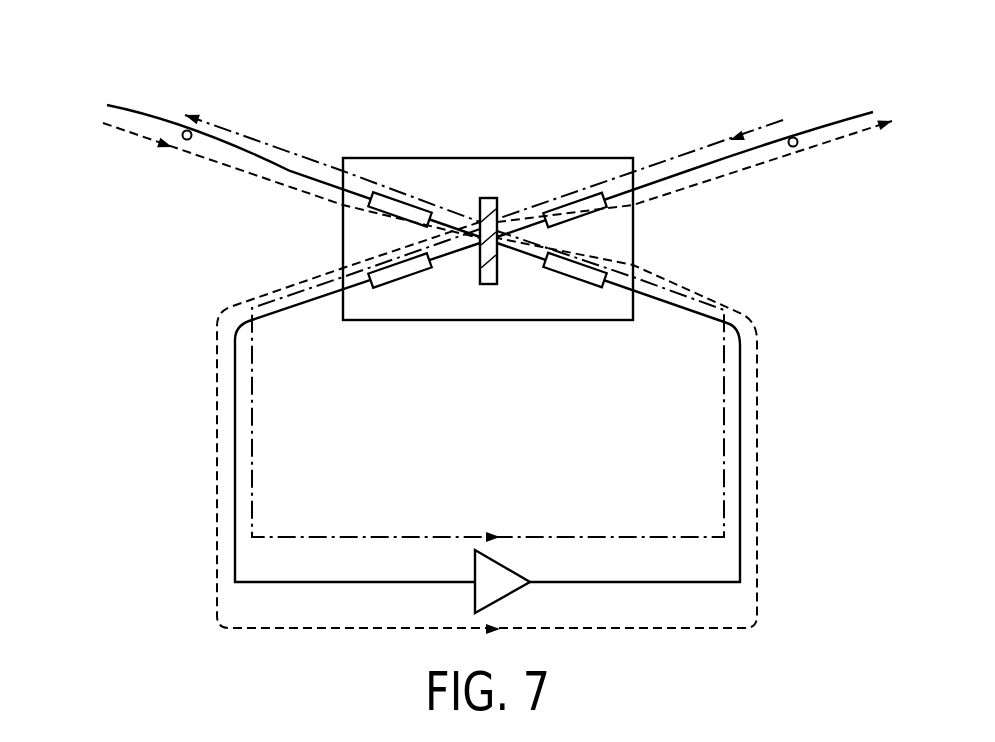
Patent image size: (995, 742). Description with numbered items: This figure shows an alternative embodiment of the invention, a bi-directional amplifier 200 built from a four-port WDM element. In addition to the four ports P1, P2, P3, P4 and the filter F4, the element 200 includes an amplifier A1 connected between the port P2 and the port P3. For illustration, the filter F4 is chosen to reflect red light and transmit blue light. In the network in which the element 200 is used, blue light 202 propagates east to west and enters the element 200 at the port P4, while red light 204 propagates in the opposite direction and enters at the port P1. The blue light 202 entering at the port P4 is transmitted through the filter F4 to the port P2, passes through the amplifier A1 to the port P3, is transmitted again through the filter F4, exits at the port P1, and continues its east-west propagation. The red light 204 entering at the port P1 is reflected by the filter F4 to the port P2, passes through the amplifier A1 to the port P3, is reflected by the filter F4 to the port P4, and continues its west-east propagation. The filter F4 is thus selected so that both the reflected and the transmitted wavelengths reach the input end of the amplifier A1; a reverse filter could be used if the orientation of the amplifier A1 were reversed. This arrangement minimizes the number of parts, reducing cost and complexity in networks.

The bi-directional amplifier 200 is at (706, 90).
The blue light 202 is at (512, 298).
The red light 204 is at (474, 371).
The port P1 is at (282, 166).
The port P2 is at (283, 314).
The port P3 is at (681, 310).
The port P4 is at (686, 170).
The filter F4 is at (488, 198).
The amplifier A1 is at (477, 553).